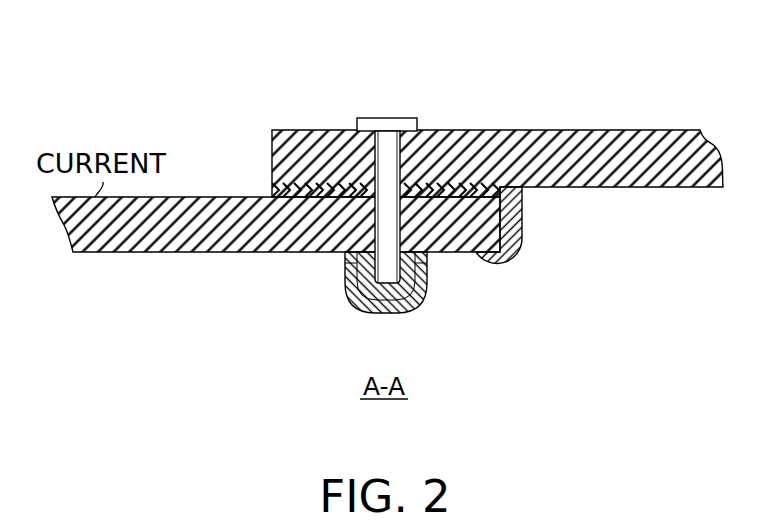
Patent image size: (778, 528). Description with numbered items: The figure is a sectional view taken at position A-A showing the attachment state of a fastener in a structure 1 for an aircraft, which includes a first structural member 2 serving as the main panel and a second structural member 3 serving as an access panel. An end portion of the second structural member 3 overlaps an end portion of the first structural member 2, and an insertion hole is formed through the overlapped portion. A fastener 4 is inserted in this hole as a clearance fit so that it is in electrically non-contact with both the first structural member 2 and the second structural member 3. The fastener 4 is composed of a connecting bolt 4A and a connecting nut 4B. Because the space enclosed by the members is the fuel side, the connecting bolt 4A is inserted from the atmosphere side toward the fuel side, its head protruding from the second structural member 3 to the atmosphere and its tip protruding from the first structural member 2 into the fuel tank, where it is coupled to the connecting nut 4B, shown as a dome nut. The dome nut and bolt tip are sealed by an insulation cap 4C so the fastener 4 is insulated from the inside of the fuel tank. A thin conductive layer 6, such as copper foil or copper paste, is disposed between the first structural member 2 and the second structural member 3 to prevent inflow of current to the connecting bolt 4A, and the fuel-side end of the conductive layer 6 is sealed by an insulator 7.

The structure 1 is at (387, 185).
The first structural member 2 is at (186, 197).
The second structural member 3 is at (588, 130).
The fastener 4 is at (360, 212).
The connecting bolt 4A is at (371, 118).
The connecting nut 4B is at (407, 306).
The insulation cap 4C is at (346, 282).
The conductive layer 6 is at (272, 190).
The insulator 7 is at (524, 233).